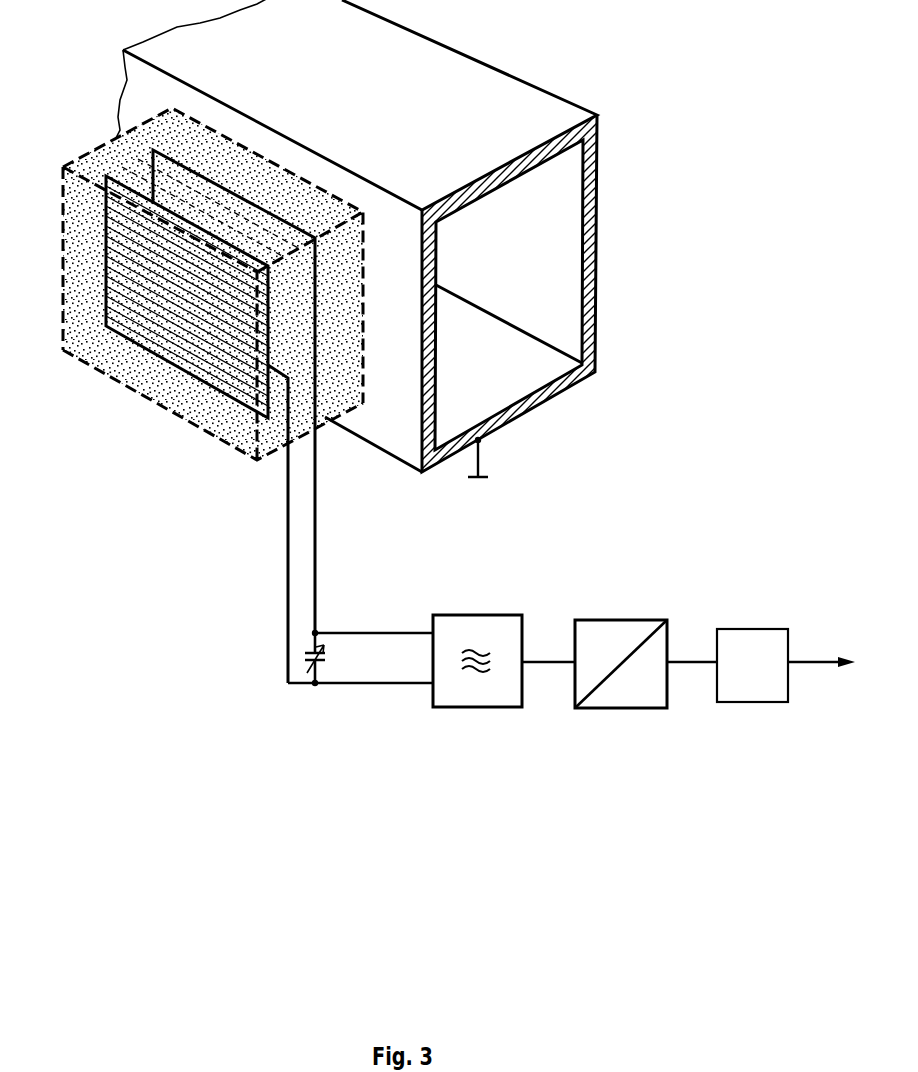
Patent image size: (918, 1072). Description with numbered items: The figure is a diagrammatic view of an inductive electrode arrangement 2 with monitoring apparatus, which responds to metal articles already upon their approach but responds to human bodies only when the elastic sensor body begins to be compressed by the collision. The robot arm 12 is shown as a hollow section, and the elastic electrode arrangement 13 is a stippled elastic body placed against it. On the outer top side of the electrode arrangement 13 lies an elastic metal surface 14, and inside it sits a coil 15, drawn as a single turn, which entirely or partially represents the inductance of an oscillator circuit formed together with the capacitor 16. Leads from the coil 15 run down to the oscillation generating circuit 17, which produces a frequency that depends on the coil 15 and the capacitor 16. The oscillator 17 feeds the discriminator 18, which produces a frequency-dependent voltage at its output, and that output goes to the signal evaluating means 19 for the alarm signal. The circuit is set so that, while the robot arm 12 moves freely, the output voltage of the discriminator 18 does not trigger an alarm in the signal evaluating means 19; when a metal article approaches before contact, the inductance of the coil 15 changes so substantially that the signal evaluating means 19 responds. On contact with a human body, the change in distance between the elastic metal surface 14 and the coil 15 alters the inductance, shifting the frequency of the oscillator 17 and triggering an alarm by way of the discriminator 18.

The inductive electrode arrangement 2 is at (251, 488).
The robot arm 12 is at (483, 80).
The elastic electrode arrangement 13 is at (152, 380).
The elastic metal surface 14 is at (207, 365).
The coil 15 is at (153, 200).
The capacitor of oscillator circuit 16 is at (322, 686).
The oscillation generating circuit 17 is at (487, 695).
The discriminator 18 is at (610, 697).
The signal evaluating means 19 is at (738, 690).